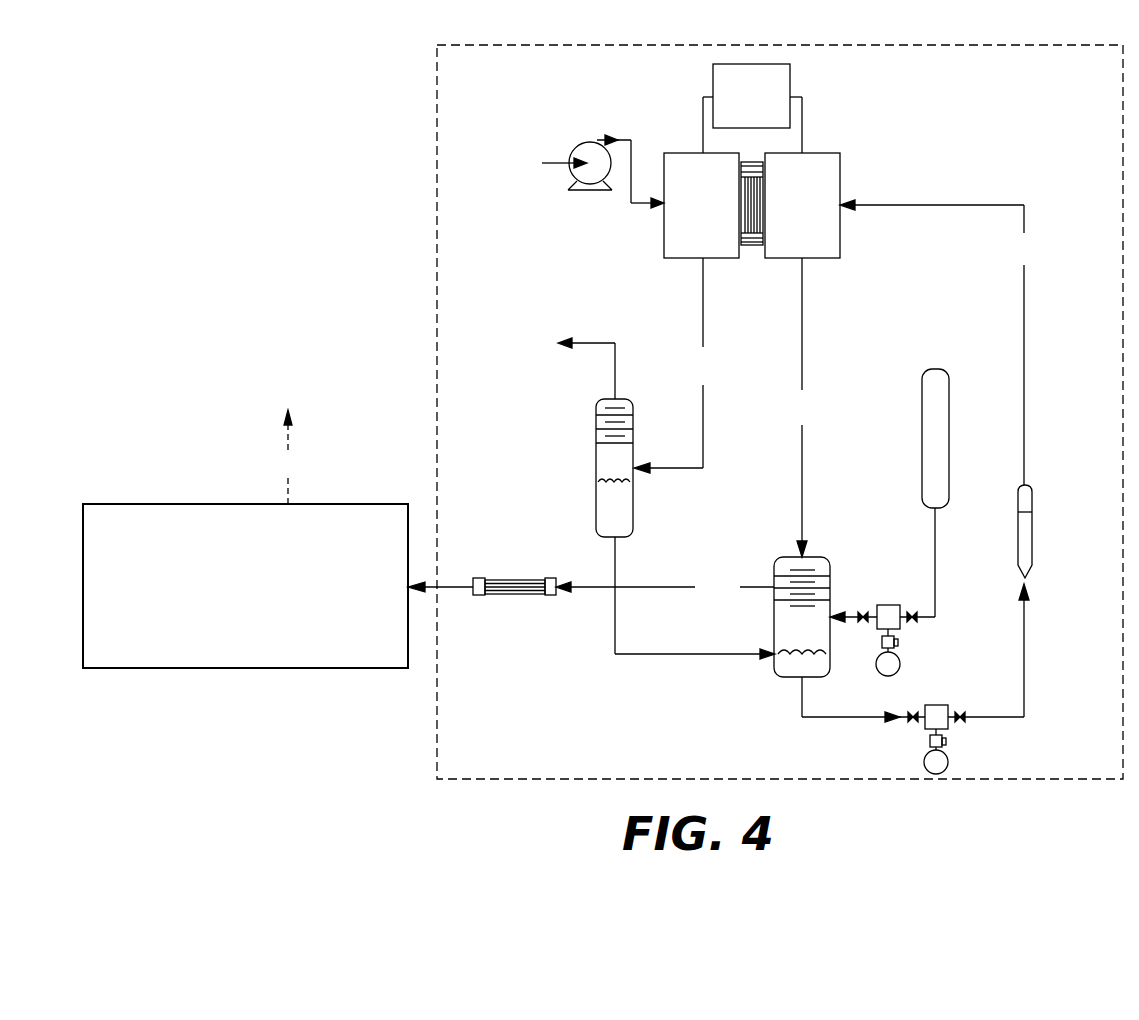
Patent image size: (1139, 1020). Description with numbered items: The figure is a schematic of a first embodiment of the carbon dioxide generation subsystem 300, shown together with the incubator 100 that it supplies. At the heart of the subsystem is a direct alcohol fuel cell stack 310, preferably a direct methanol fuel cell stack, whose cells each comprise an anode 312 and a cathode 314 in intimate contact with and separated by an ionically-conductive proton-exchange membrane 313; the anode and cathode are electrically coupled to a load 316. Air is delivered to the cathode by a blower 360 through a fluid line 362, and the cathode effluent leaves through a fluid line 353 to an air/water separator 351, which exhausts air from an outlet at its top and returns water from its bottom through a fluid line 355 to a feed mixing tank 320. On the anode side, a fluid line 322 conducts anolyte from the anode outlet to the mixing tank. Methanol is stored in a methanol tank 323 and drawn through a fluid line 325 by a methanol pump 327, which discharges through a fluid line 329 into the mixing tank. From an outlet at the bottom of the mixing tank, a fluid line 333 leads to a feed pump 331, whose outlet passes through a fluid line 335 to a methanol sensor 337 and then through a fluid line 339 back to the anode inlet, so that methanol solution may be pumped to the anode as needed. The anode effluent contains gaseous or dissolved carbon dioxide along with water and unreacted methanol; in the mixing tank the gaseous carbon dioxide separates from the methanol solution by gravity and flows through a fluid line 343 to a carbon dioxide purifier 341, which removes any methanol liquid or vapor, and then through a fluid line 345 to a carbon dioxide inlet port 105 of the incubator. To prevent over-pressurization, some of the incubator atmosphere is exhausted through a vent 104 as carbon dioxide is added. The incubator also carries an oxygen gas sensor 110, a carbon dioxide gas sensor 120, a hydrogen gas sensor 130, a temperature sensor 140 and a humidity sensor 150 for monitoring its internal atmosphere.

The carbon dioxide generation subsystem 300 is at (1100, 96).
The load 316 is at (738, 118).
The cathode 314 is at (688, 225).
The anode 312 is at (789, 225).
The proton-exchange membrane 313 is at (751, 163).
The direct alcohol fuel cell stack 310 is at (752, 292).
The blower 360 is at (590, 191).
The fluid line 362 is at (632, 165).
The fluid line 353 is at (703, 318).
The air/water separator 351 is at (596, 512).
The fluid line 355 is at (615, 623).
The fluid line 343 is at (658, 587).
The CO2 purifier 341 is at (530, 580).
The fluid line 345 is at (448, 587).
The fluid line 322 is at (803, 464).
The feed mixing tank 320 is at (774, 675).
The fluid line 333 is at (802, 708).
The feed pump 331 is at (924, 757).
The fluid line 335 is at (1024, 646).
The methanol sensor 337 is at (1032, 535).
The fluid line 339 is at (1024, 297).
The methanol tank 323 is at (949, 395).
The fluid line 325 is at (935, 532).
The fluid line 329 is at (862, 610).
The methanol pump 327 is at (882, 674).
The incubator 100 is at (302, 578).
The vent 104 is at (284, 472).
The carbon dioxide inlet port 105 is at (389, 592).
The oxygen gas sensor 110 is at (123, 557).
The carbon dioxide gas sensor 120 is at (128, 582).
The hydrogen gas sensor 130 is at (122, 607).
The temperature sensor 140 is at (133, 631).
The humidity sensor 150 is at (124, 656).